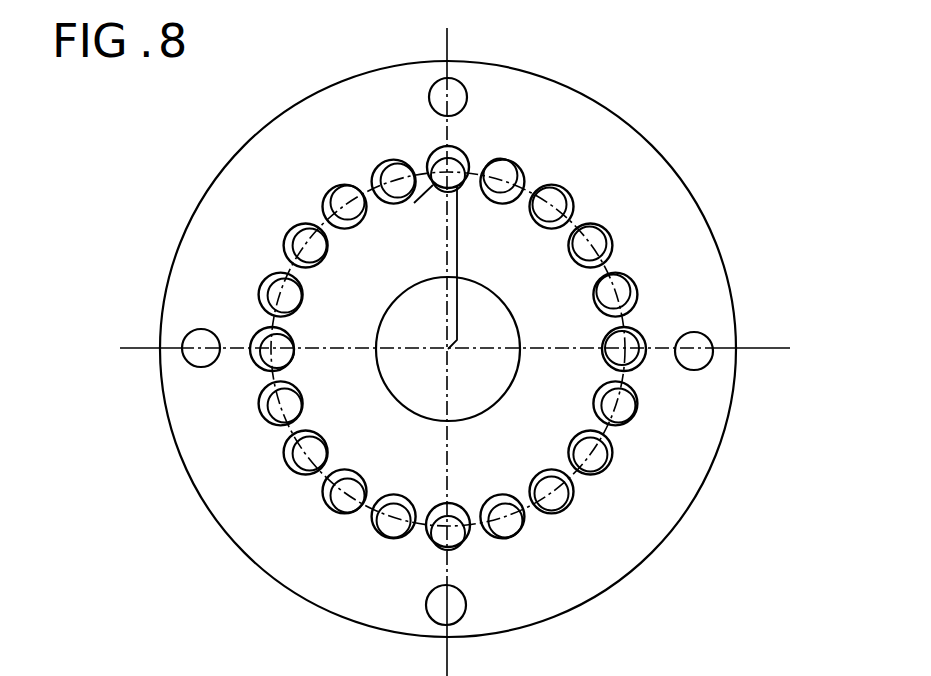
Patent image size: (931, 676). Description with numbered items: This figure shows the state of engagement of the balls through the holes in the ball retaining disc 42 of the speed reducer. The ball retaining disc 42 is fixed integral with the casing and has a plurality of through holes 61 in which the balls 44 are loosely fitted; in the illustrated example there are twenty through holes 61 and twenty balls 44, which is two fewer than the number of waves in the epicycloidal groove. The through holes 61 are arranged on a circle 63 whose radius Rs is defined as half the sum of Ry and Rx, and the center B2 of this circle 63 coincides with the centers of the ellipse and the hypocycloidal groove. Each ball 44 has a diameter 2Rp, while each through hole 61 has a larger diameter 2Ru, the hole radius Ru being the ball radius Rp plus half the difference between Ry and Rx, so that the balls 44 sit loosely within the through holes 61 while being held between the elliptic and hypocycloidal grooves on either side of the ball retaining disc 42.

The ball retaining disc 42 is at (527, 70).
The balls 44 is at (580, 193).
The through holes 61 is at (575, 212).
The circle 63 is at (630, 320).
The ball diameter 2Rp is at (463, 151).
The through hole diameter 2Ru is at (540, 252).
The radius of circle Rs is at (476, 268).
The center of circle B2 is at (448, 350).